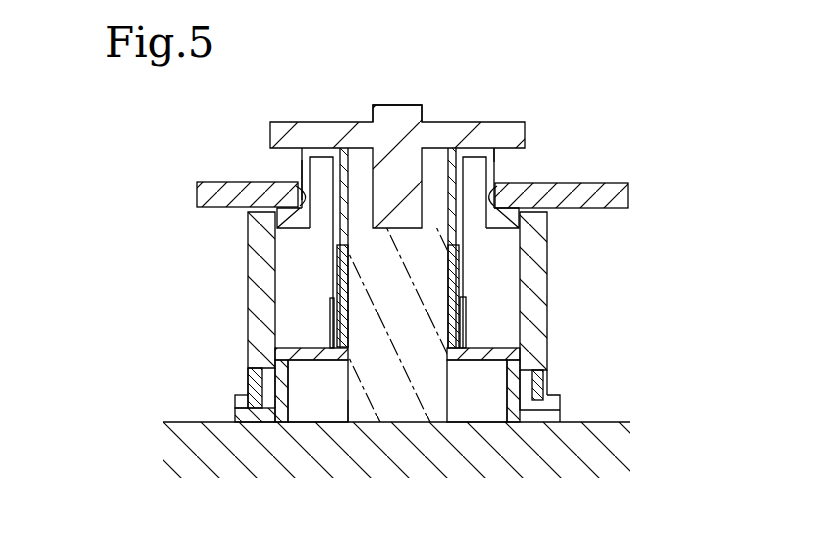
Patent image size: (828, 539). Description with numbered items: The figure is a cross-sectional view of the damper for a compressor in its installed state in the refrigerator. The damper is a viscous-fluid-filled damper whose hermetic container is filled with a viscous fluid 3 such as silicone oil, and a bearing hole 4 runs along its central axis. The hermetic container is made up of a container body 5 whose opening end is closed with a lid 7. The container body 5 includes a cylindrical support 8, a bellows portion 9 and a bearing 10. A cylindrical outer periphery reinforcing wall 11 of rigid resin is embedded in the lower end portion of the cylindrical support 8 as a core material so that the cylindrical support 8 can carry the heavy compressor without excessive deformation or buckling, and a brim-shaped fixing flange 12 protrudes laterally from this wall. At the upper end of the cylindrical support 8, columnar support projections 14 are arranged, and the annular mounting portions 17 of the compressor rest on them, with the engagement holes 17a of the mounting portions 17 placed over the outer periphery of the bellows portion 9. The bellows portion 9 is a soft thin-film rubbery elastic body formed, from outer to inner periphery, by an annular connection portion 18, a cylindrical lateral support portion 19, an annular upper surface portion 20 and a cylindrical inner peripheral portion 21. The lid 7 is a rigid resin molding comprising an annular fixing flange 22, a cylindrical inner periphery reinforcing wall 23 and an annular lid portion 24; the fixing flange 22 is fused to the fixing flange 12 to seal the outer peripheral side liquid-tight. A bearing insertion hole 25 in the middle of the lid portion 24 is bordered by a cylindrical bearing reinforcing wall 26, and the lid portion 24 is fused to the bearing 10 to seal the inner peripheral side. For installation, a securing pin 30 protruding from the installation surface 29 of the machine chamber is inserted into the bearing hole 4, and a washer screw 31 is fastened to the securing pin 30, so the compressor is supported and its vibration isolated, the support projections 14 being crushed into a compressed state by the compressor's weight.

The viscous fluid 3 is at (482, 277).
The bearing hole 4 is at (359, 146).
The container body 5 is at (548, 303).
The lid 7 is at (561, 418).
The cylindrical support 8 is at (250, 285).
The bellows portion 9 is at (300, 175).
The bearing 10 is at (340, 276).
The outer periphery reinforcing wall 11 is at (250, 378).
The fixing flange 12 is at (237, 397).
The support projections 14 is at (262, 211).
The annular mounting portions 17 is at (197, 192).
The engagement holes 17a is at (303, 196).
The annular connection portion 18 is at (500, 200).
The cylindrical lateral support portion 19 is at (500, 152).
The annular upper surface portion 20 is at (323, 148).
The cylindrical inner peripheral portion 21 is at (433, 150).
The fixing flange 22 is at (234, 415).
The inner periphery reinforcing wall 23 is at (311, 385).
The lid portion 24 is at (310, 346).
The bearing insertion hole 25 is at (447, 361).
The bearing reinforcing wall 26 is at (466, 336).
The installation surface 29 is at (165, 421).
The securing pin 30 is at (347, 410).
The washer screw 31 is at (395, 105).